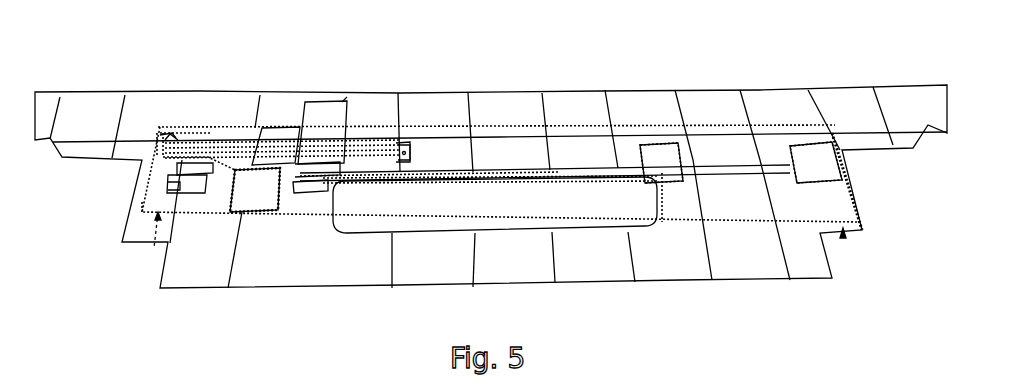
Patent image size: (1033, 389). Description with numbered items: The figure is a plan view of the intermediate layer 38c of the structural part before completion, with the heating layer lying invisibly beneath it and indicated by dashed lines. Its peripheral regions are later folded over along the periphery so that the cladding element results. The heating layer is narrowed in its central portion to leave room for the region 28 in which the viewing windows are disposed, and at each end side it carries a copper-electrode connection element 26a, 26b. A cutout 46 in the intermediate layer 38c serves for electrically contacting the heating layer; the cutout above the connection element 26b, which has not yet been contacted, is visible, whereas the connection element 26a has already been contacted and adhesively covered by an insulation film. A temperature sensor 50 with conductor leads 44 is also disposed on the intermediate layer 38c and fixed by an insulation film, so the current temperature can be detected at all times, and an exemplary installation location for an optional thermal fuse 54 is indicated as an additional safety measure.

The connection element 26a is at (168, 133).
The connection element 26b is at (140, 213).
The region 28 is at (485, 203).
The intermediate layer 38c is at (773, 110).
The conductor leads 44 is at (218, 140).
The cutout 46 is at (172, 140).
The temperature sensor 50 is at (398, 135).
The thermal fuse 54 is at (447, 148).